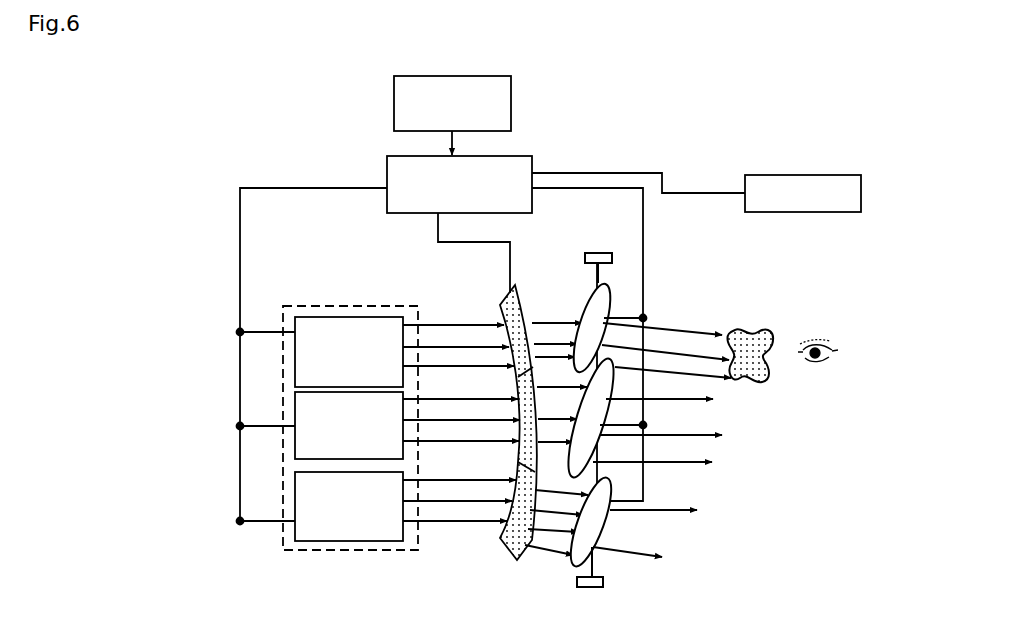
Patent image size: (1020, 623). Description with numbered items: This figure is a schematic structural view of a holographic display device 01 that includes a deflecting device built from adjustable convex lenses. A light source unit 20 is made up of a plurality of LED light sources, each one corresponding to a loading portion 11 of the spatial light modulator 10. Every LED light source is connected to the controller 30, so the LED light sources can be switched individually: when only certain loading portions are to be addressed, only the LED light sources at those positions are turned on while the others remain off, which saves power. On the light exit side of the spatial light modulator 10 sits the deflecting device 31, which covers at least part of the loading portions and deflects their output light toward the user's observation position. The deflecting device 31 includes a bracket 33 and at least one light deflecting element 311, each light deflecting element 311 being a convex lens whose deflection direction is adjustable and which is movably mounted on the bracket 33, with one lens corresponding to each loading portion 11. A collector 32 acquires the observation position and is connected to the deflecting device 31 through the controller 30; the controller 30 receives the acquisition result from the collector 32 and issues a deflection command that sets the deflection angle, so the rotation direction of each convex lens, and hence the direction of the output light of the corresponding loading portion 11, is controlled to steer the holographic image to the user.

The holographic display device 01 is at (220, 197).
The spatial light modulator 10 is at (496, 439).
The loading portion 11 is at (512, 304).
The light source unit 20 is at (283, 375).
The controller 30 is at (402, 173).
The deflecting device 31 is at (664, 423).
The light deflecting element 311 is at (605, 530).
The collector 32 is at (767, 207).
The bracket 33 is at (605, 585).